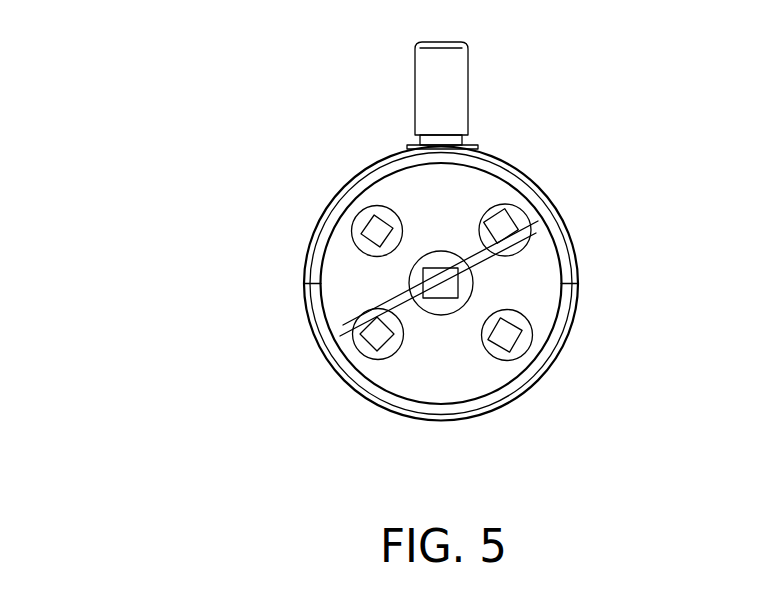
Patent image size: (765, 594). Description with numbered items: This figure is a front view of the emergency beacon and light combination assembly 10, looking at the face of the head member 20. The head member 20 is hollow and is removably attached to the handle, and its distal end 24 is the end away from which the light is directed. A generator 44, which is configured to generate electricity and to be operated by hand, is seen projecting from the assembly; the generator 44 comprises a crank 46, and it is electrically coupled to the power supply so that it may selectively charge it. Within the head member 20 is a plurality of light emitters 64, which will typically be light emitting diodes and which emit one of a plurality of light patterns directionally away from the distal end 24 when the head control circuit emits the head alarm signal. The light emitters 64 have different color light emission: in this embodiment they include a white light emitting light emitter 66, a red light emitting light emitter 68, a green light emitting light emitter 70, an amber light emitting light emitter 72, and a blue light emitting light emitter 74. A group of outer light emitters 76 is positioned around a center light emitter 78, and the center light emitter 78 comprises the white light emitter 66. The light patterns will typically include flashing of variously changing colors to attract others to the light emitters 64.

The emergency beacon and light combination assembly 10 is at (172, 303).
The head member 20 is at (548, 203).
The distal end 24 is at (502, 397).
The generator 44 is at (450, 73).
The crank 46 is at (426, 84).
The light emitters 64 is at (442, 266).
The white light emitting light emitter 66 is at (431, 309).
The red light emitting light emitter 68 is at (366, 248).
The green light emitting light emitter 70 is at (378, 358).
The amber light emitting light emitter 72 is at (474, 278).
The blue light emitting light emitter 74 is at (516, 317).
The outer light emitters 76 is at (379, 206).
The center light emitter 78 is at (412, 275).